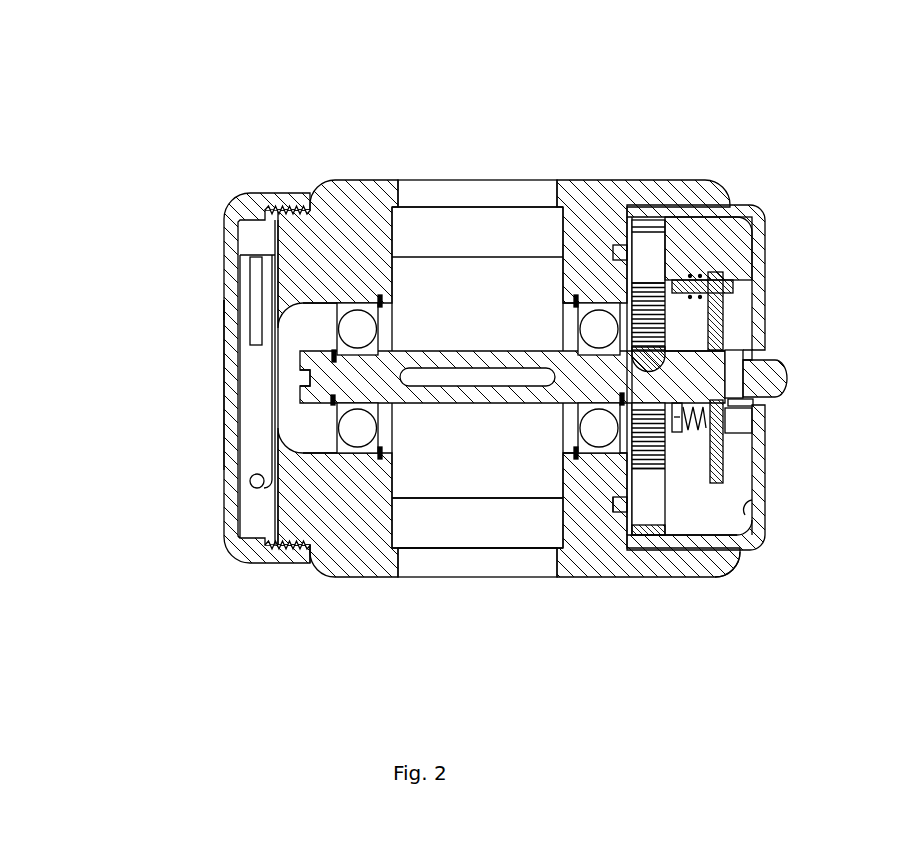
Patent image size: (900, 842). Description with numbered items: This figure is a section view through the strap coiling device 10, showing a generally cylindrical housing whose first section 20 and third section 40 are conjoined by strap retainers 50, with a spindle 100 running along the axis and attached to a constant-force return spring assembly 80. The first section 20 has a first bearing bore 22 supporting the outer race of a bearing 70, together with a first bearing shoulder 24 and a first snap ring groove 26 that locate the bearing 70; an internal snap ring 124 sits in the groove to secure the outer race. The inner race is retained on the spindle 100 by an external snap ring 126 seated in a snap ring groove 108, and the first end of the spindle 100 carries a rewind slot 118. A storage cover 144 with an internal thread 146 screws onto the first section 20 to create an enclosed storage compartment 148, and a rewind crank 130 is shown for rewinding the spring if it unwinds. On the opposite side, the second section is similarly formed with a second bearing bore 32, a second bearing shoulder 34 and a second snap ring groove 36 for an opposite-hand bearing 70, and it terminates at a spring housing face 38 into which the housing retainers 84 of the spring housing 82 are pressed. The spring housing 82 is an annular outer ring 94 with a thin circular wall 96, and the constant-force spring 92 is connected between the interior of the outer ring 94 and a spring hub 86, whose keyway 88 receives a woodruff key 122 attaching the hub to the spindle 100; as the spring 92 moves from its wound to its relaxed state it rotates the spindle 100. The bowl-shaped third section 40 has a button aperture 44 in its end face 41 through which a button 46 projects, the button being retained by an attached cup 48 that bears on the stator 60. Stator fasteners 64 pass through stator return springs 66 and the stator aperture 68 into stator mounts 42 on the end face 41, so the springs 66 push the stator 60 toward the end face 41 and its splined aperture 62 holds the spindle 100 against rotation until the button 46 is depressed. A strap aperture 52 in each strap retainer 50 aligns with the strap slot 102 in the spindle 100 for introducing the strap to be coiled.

The device 10 is at (124, 178).
The first section 20 is at (398, 246).
The first bearing bore 22 is at (250, 217).
The first bearing shoulder 24 is at (262, 262).
The first snap ring groove 26 is at (285, 208).
The second bearing bore 32 is at (598, 300).
The second bearing shoulder 34 is at (612, 445).
The second snap ring groove 36 is at (586, 300).
The spring housing face 38 is at (629, 535).
The third section 40 is at (762, 207).
The end face 41 is at (767, 522).
The stator mounts 42 is at (743, 422).
The button aperture 44 is at (760, 399).
The button 46 is at (787, 378).
The cup 48 is at (737, 372).
The strap retainers 50 is at (377, 179).
The strap aperture 52 is at (517, 555).
The stator 60 is at (767, 497).
The splined aperture 62 is at (752, 410).
The stator fasteners 64 is at (733, 290).
The stator return springs 66 is at (760, 535).
The stator aperture 68 is at (722, 285).
The bearing 70 is at (355, 432).
The return spring assembly 80 is at (728, 568).
The spring housing 82 is at (671, 495).
The housing retainers 84 is at (626, 503).
The spring hub 86 is at (665, 348).
The keyway 88 is at (692, 352).
The constant-force spring 92 is at (650, 262).
The outer ring 94 is at (653, 300).
The wall 96 is at (645, 500).
The spindle 100 is at (517, 407).
The strap slot 102 is at (460, 378).
The snap ring groove 108 is at (270, 335).
The rewind slot 118 is at (305, 377).
The woodruff key 122 is at (690, 276).
The internal snap ring 124 is at (300, 550).
The external snap ring 126 is at (333, 402).
The rewind crank 130 is at (245, 465).
The storage cover 144 is at (224, 388).
The internal thread 146 is at (245, 548).
The storage compartment 148 is at (255, 268).